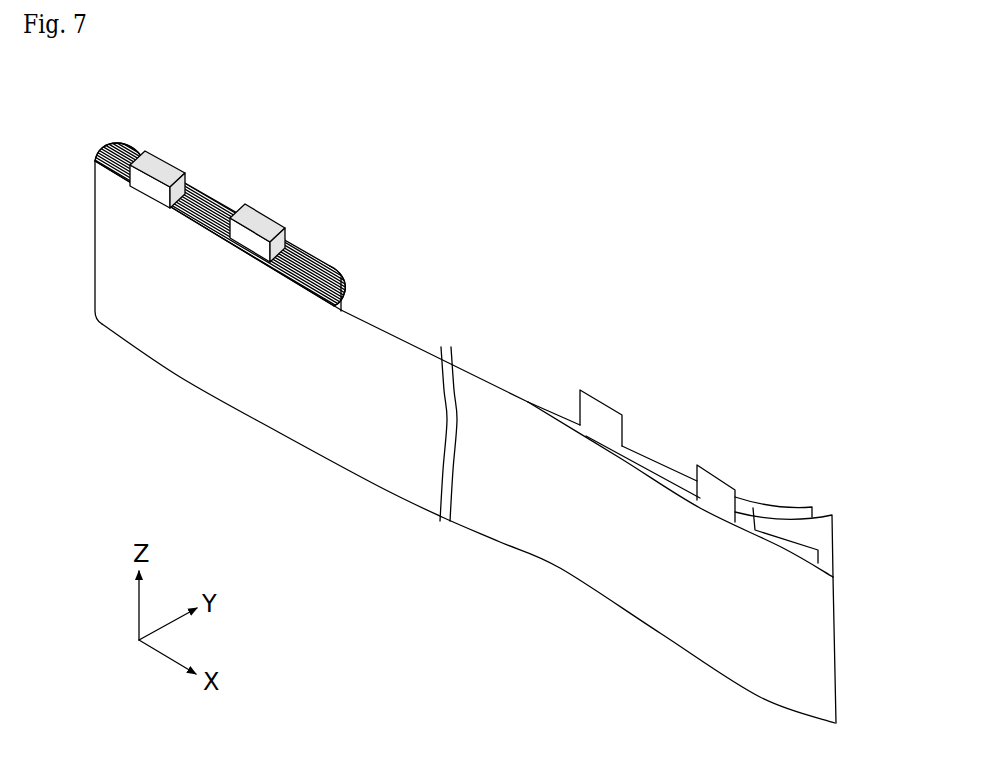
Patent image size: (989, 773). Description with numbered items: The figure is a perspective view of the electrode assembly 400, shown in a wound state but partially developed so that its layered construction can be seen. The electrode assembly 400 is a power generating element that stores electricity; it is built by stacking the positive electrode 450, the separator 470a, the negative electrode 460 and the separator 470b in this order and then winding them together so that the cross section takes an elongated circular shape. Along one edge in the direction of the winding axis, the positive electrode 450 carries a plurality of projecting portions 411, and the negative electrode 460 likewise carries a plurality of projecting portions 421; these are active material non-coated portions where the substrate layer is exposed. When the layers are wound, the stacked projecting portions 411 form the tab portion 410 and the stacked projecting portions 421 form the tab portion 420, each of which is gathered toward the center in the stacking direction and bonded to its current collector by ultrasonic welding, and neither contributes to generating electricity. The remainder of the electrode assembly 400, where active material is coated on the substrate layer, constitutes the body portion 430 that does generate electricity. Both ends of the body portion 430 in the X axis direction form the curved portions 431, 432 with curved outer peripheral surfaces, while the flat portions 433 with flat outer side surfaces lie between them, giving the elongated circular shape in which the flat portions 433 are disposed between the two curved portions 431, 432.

The electrode assembly 400 is at (663, 202).
The tab portion 410 is at (178, 169).
The projecting portions 411 is at (600, 397).
The tab portion 420 is at (267, 221).
The projecting portions 421 is at (712, 472).
The body portion 430 is at (108, 230).
The curved portion 431 is at (102, 155).
The curved portion 432 is at (343, 283).
The flat portions 433 is at (222, 195).
The positive electrode 450 is at (650, 457).
The negative electrode 460 is at (753, 508).
The separator 470a is at (827, 513).
The separator 470b is at (783, 547).